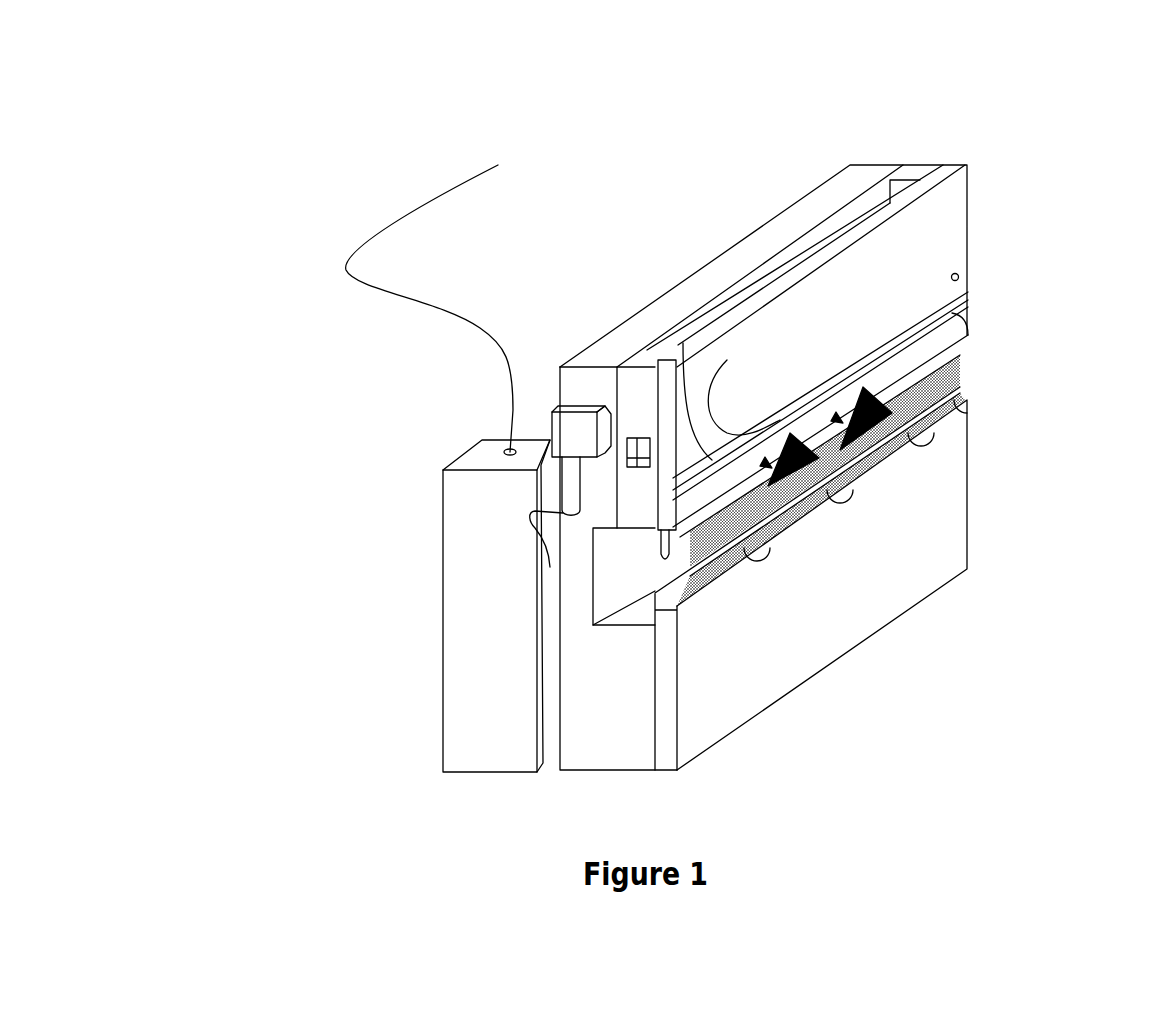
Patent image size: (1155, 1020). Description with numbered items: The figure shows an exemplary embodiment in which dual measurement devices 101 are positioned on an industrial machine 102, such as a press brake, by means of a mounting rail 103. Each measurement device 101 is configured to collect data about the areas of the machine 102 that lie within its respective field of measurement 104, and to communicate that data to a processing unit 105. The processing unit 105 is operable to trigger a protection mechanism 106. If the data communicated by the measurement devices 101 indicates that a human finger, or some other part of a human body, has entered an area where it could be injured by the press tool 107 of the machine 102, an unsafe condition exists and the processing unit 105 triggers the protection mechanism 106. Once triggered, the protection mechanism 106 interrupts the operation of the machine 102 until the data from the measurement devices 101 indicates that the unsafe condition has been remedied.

The measurement devices 101 is at (790, 433).
The industrial machine 102 is at (833, 307).
The mounting rail 103 is at (968, 333).
The fields of measurement 104 is at (841, 421).
The processing unit 105 is at (575, 432).
The protection mechanism 106 is at (474, 600).
The press tool 107 is at (715, 516).